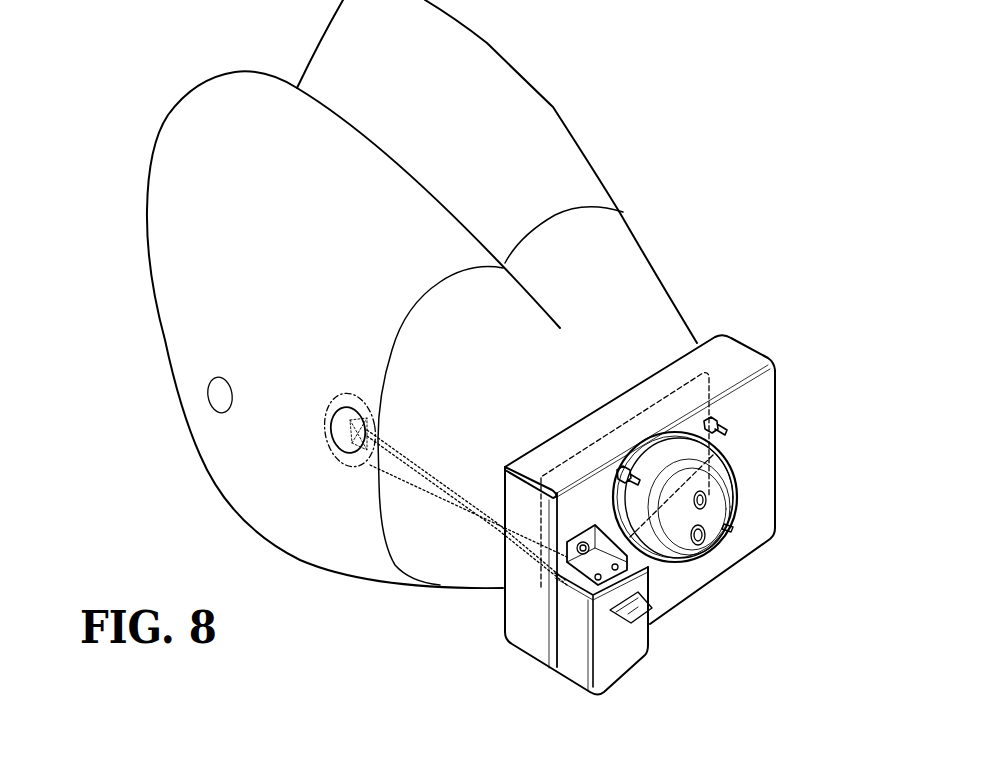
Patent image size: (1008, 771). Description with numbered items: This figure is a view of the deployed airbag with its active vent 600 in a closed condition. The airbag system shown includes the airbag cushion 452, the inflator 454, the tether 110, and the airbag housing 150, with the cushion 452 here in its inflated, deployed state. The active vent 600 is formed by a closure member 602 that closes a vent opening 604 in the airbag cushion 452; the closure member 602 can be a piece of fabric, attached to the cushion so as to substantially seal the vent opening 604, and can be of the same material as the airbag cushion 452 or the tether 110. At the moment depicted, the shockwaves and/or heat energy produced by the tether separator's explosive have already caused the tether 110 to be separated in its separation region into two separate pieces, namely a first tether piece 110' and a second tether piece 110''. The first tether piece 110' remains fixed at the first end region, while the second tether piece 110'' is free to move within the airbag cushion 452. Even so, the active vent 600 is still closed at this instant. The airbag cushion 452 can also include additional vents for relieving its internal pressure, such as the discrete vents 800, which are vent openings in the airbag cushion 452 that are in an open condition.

The airbag cushion 452 is at (243, 460).
The discrete vents 800 is at (215, 375).
The vent opening 604 is at (332, 423).
The closure member 602 is at (367, 400).
The active vent 600 is at (348, 470).
The second tether piece 110'' is at (467, 532).
The airbag housing 150 is at (762, 430).
The inflator 454 is at (730, 497).
The tether 110 is at (667, 566).
The first tether piece 110' is at (671, 626).